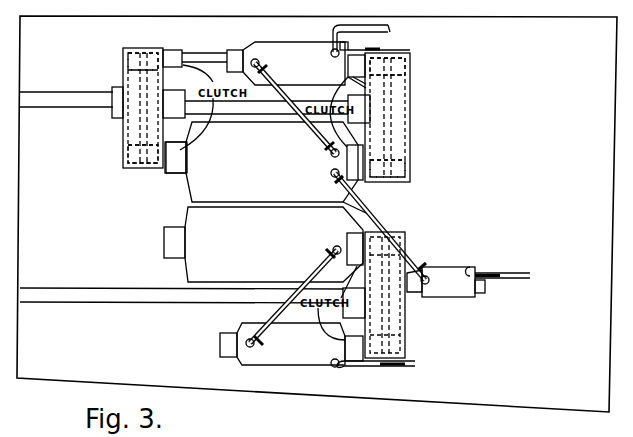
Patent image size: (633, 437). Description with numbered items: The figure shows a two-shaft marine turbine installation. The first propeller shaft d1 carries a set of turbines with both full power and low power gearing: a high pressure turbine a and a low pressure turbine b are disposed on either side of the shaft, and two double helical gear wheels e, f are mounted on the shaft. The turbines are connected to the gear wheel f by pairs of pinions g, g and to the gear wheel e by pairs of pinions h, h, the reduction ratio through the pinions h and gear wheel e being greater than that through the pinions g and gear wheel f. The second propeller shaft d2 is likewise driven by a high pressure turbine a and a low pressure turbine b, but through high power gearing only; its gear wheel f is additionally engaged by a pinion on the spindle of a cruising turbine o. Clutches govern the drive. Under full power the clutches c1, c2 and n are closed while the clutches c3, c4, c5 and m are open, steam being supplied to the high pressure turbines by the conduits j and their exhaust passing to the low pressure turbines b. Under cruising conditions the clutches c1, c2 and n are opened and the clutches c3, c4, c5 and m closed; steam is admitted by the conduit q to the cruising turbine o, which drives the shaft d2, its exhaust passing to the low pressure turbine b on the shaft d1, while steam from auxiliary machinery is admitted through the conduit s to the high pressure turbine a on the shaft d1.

The high pressure turbine a is at (282, 203).
The low pressure turbine b is at (263, 202).
The clutch c1 is at (346, 377).
The clutch c2 is at (375, 212).
The clutch c3 is at (172, 55).
The clutch c4 is at (173, 173).
The clutch c5 is at (420, 264).
The propeller shaft d1 is at (60, 101).
The propeller shaft d2 is at (67, 297).
The double helical gear wheel e is at (142, 128).
The double helical gear wheel f is at (395, 117).
The pinions g is at (397, 67).
The pinions h is at (128, 58).
The conduit j is at (390, 34).
The clutch m is at (174, 104).
The clutch n is at (356, 206).
The cruising turbine o is at (446, 282).
The conduit q is at (528, 278).
The conduit s is at (410, 50).